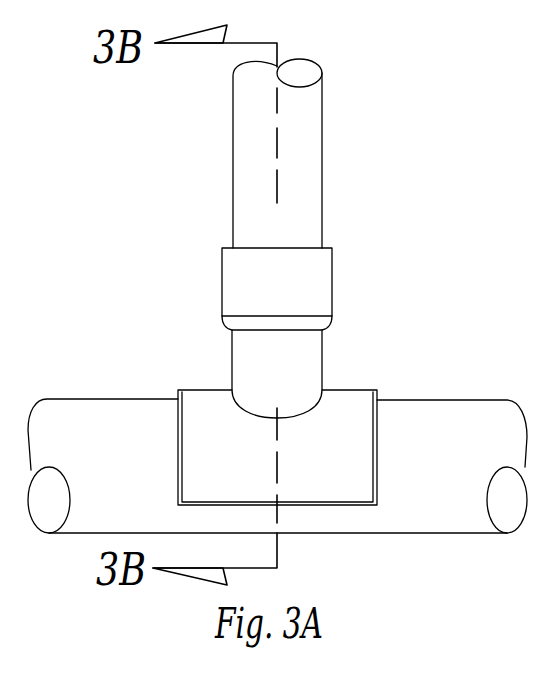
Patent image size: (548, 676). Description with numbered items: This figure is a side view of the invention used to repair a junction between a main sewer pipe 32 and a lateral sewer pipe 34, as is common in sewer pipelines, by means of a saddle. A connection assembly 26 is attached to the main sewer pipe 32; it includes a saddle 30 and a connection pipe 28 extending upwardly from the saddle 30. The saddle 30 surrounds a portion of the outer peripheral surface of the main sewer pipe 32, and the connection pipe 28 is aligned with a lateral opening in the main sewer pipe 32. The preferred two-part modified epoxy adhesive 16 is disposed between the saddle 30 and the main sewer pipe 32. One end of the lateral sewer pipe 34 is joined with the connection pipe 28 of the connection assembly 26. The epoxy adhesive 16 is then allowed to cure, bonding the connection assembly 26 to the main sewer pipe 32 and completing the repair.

The two-part modified epoxy adhesive 16 is at (178, 450).
The connection assembly 26 is at (192, 327).
The connection pipe 28 is at (320, 273).
The saddle 30 is at (350, 401).
The main sewer pipe 32 is at (96, 406).
The lateral sewer pipe 34 is at (243, 130).